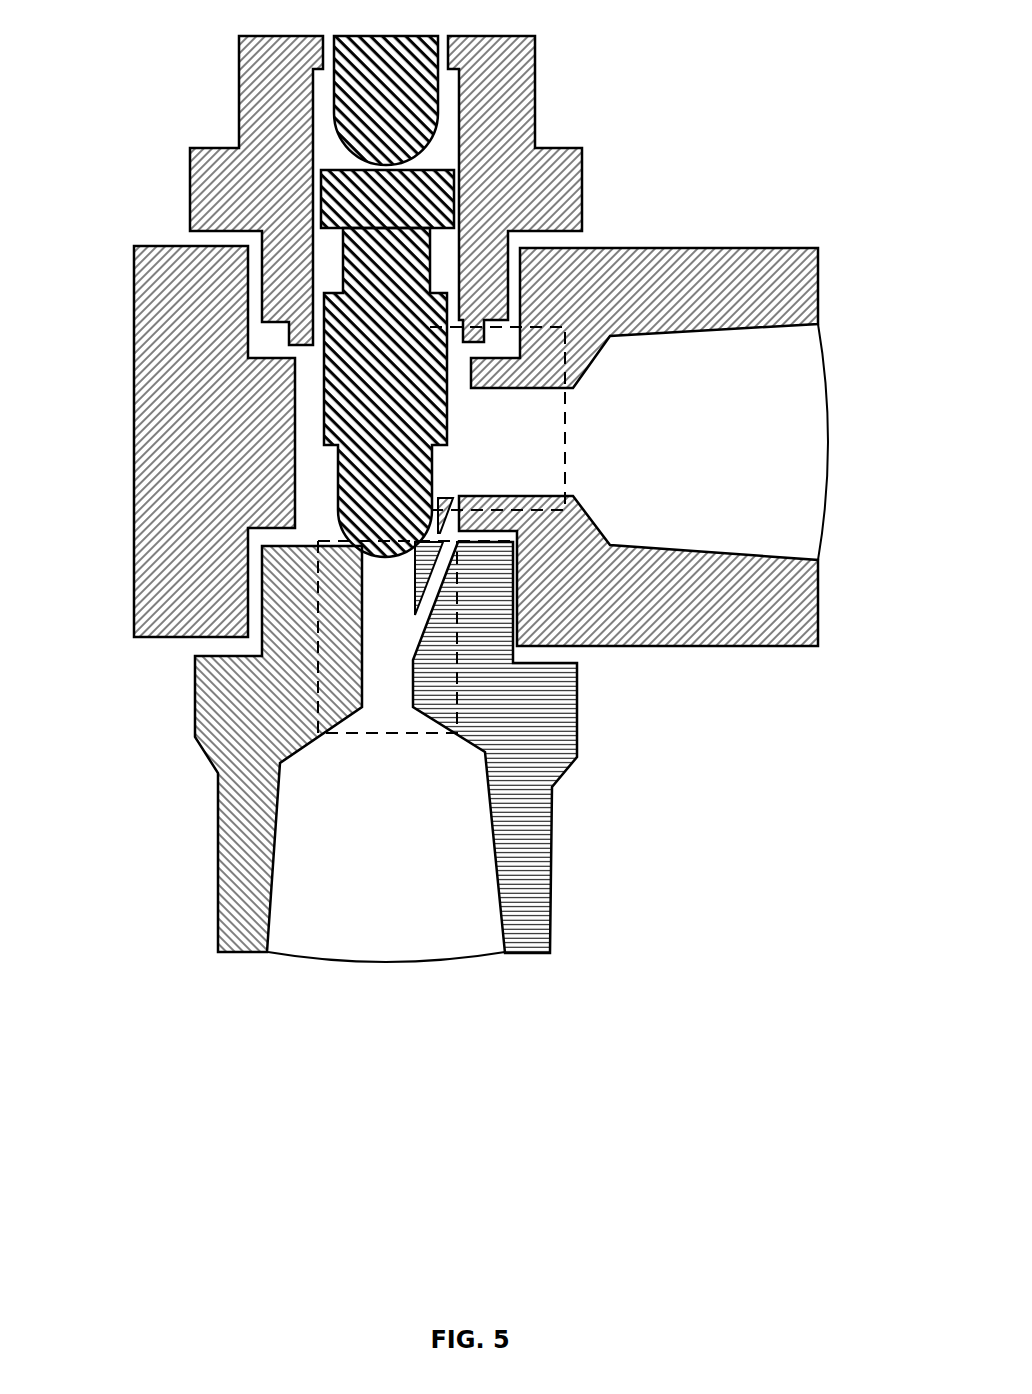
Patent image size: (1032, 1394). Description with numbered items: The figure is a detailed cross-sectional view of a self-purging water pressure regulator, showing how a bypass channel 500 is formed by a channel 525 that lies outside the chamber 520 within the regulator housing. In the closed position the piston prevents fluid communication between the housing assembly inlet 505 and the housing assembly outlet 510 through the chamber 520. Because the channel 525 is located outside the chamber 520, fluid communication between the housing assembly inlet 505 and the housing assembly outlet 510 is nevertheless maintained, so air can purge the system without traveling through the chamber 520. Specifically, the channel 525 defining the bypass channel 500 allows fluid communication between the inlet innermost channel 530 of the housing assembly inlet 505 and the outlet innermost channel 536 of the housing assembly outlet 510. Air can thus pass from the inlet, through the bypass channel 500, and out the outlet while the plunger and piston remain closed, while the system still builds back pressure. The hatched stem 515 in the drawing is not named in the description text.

The bypass channel 500 is at (427, 589).
The housing assembly inlet 505 is at (482, 958).
The housing assembly outlet 510 is at (810, 472).
The plunger stem 515 is at (353, 207).
The chamber 520 is at (313, 482).
The channel 525 is at (443, 577).
The inlet innermost channel 530 is at (373, 733).
The outlet innermost channel 536 is at (567, 437).